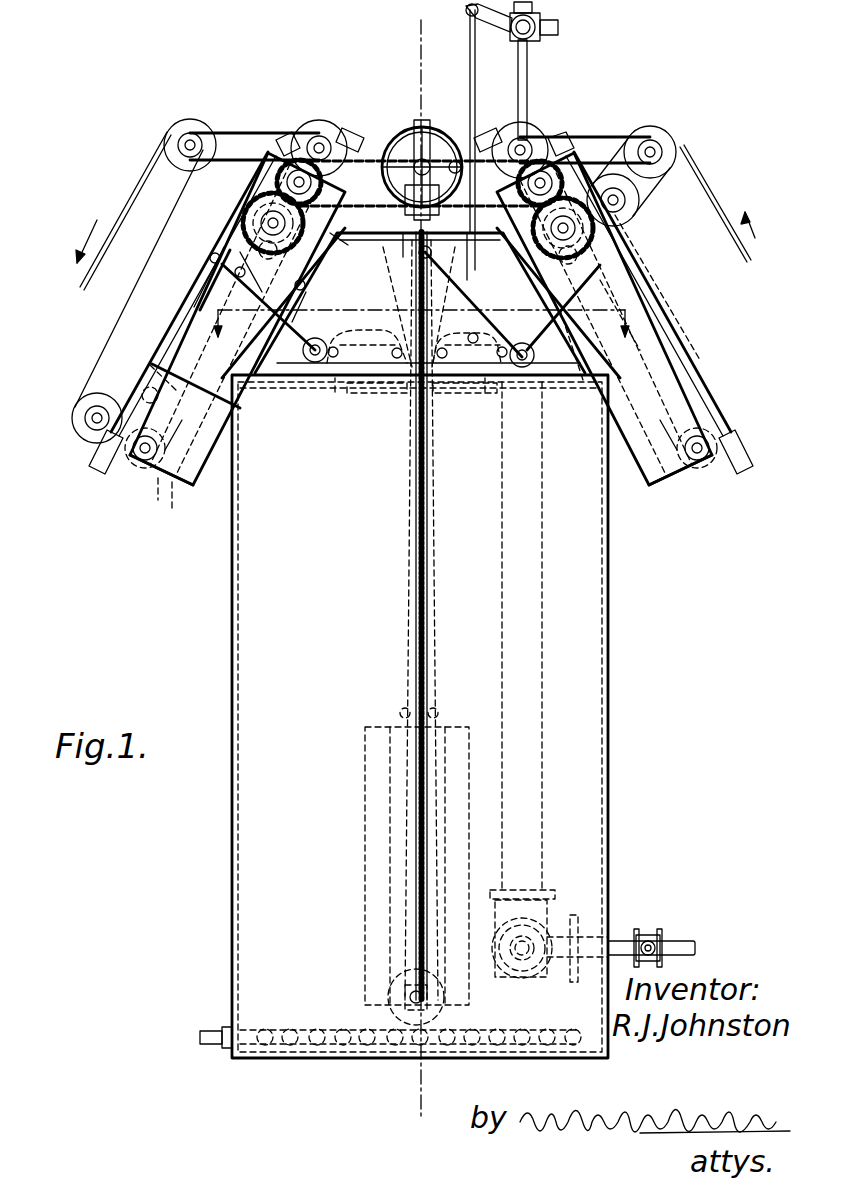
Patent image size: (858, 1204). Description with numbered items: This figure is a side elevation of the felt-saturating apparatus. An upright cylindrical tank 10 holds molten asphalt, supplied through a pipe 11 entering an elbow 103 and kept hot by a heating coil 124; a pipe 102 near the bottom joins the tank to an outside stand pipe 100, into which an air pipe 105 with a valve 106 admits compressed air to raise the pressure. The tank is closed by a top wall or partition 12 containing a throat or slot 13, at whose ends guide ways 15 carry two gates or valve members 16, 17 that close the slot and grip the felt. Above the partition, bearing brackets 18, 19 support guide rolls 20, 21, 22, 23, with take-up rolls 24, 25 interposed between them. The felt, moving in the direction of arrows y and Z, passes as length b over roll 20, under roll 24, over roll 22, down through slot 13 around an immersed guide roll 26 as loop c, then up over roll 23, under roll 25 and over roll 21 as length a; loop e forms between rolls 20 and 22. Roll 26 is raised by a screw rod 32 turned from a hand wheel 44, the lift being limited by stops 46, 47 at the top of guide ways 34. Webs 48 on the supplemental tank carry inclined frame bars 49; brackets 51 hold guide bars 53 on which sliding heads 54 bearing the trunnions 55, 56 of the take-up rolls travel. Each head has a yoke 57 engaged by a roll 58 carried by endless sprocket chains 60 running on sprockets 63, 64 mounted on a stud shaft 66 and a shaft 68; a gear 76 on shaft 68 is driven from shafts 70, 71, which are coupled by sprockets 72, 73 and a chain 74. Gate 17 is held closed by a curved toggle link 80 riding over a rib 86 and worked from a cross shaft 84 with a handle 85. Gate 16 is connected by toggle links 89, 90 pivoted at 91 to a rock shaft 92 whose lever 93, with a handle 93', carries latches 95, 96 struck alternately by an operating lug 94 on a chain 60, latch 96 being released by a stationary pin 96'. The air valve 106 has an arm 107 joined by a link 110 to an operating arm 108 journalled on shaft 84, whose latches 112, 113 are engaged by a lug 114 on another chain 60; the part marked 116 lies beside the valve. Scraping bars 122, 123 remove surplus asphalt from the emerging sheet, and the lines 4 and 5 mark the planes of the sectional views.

The upright cylindrical tank 10 is at (610, 715).
The pipe 11 is at (674, 945).
The top wall or partition 12 is at (275, 378).
The throat or slot 13 is at (445, 400).
The guide ways 15 is at (352, 394).
The gate or valve member 16 is at (382, 394).
The gate or valve member 17 is at (426, 400).
The bearing bracket 18 is at (595, 145).
The bearing bracket 19 is at (226, 133).
The guide roll 20 is at (657, 135).
The guide roll 21 is at (181, 130).
The guide roll 22 is at (535, 135).
The guide roll 23 is at (312, 125).
The take-up roll 24 is at (621, 204).
The take-up roll 25 is at (80, 426).
The immersed guide roll 26 is at (440, 1015).
The screw rod 32 is at (430, 590).
The guide way 34 is at (364, 795).
The hand wheel 44 is at (400, 130).
The stop or lug 46 is at (439, 714).
The stop or lug 47 is at (399, 712).
The webs 48 is at (303, 312).
The inclined frame bar 49 is at (192, 488).
The bracket 51 is at (166, 440).
The guide bar 53 is at (92, 476).
The sliding head 54 is at (625, 235).
The trunnions 55 is at (627, 210).
The trunnions 56 is at (92, 418).
The yoke 57 is at (175, 507).
The roll 58 is at (160, 498).
The endless sprocket chain 60 is at (170, 352).
The sprocket 63 is at (135, 463).
The sprocket 64 is at (250, 212).
The stud shaft 66 is at (144, 461).
The shaft 68 is at (262, 218).
The shaft 70 is at (545, 172).
The shaft 71 is at (292, 160).
The sprocket 72 is at (568, 150).
The sprocket 73 is at (280, 140).
The endless sprocket chain 74 is at (491, 135).
The gear 76 is at (258, 258).
The toggle link 80 is at (468, 342).
The cross shaft 84 is at (521, 370).
The handle 85 is at (462, 292).
The rib 86 is at (334, 393).
The toggle link 89 is at (371, 335).
The toggle link 90 is at (362, 337).
The pivot 91 is at (322, 380).
The rock shaft 92 is at (310, 365).
The arm or lever 93 is at (268, 303).
The handle 93' is at (235, 278).
The operating lug 94 is at (299, 271).
The latch 95 is at (308, 290).
The latch 96 is at (196, 278).
The stationary pin 96' is at (123, 350).
The stand pipe 100 is at (536, 667).
The pipe 102 is at (510, 968).
The elbow 103 is at (567, 984).
The air pipe 105 is at (528, 68).
The valve 106 is at (545, 17).
The arm 107 is at (492, 34).
The operating arm 108 is at (622, 306).
The link 110 is at (469, 90).
The latch 112 is at (583, 382).
The latch 113 is at (672, 322).
The lug or block 114 is at (612, 378).
The valve stem 116 is at (560, 29).
The scraping bar 122 is at (347, 245).
The scraping bar 123 is at (396, 252).
The heating coil 124 is at (292, 1046).
The length of felt a is at (78, 291).
The length of felt b is at (700, 180).
The loop of felt c is at (438, 672).
The loop of felt e is at (665, 190).
The arrow y is at (758, 230).
The arrow Z is at (70, 241).
The section line 4- 4 is at (414, 337).
The section line 5- 5 is at (408, 39).